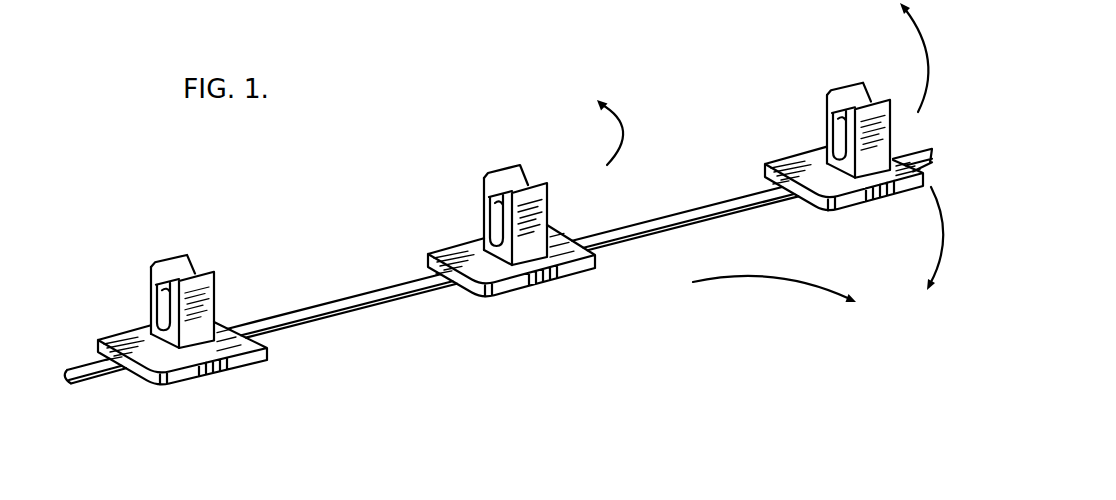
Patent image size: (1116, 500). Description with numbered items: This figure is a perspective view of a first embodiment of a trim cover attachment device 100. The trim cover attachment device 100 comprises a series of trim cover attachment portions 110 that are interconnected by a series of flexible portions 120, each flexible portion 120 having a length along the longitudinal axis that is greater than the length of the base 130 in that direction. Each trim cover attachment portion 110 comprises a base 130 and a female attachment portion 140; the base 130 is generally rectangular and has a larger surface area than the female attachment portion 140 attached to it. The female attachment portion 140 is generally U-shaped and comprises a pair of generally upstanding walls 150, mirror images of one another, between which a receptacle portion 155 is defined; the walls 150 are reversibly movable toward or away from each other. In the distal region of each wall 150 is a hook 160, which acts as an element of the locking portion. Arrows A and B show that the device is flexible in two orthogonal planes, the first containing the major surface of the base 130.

The trim cover attachment device 100 is at (453, 348).
The trim cover attachment portion 110 is at (108, 330).
The flexible portion 120 is at (337, 302).
The base 130 is at (147, 363).
The female attachment portion 140 is at (185, 233).
The upstanding wall 150 is at (152, 310).
The receptacle portion 155 is at (143, 358).
The hook 160 is at (152, 281).